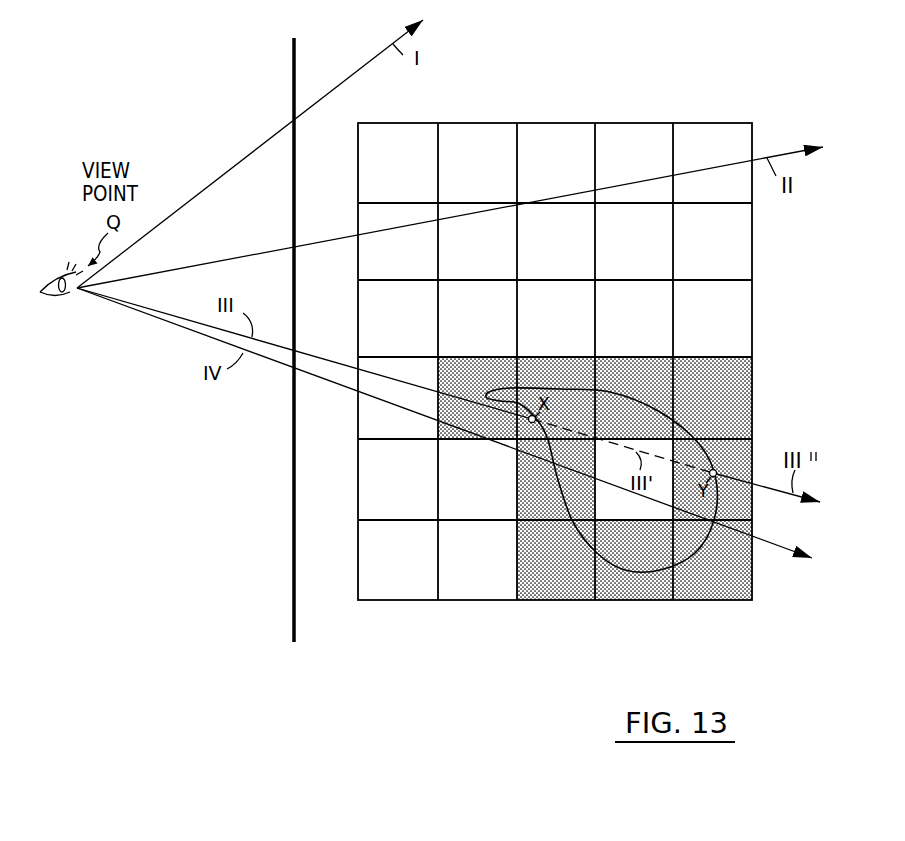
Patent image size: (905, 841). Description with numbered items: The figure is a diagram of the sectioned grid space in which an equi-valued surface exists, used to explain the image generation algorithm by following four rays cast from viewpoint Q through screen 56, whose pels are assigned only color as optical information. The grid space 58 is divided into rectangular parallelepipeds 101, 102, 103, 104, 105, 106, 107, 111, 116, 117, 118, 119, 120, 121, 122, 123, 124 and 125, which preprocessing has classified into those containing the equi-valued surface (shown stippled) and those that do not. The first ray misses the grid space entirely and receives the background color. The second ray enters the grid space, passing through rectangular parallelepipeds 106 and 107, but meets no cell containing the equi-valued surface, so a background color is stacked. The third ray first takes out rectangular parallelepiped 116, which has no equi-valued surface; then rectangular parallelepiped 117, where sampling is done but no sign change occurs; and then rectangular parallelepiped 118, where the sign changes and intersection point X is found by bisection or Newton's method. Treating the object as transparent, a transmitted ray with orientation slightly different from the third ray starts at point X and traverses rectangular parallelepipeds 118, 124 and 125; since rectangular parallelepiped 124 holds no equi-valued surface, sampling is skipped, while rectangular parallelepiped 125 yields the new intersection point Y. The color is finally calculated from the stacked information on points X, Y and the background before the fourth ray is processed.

The screen 56 is at (293, 620).
The pixel array / grid 58 is at (617, 120).
The pixel cell 101 is at (410, 155).
The pixel cell 102 is at (491, 155).
The pixel cell 103 is at (568, 155).
The pixel cell 104 is at (646, 155).
The pixel cell 105 is at (718, 155).
The rectangular parallelepiped 106 is at (408, 265).
The rectangular parallelepiped 107 is at (491, 265).
The pixel cell 111 is at (408, 316).
The rectangular parallelepiped 116 is at (434, 384).
The rectangular parallelepiped 117 is at (470, 384).
The rectangular parallelepiped 118 is at (591, 384).
The pixel cell 119 is at (667, 384).
The pixel cell 120 is at (741, 384).
The pixel cell 121 is at (408, 469).
The pixel cell 122 is at (474, 469).
The pixel cell 123 is at (590, 469).
The rectangular parallelepiped 124 is at (629, 475).
The rectangular parallelepiped 125 is at (742, 469).